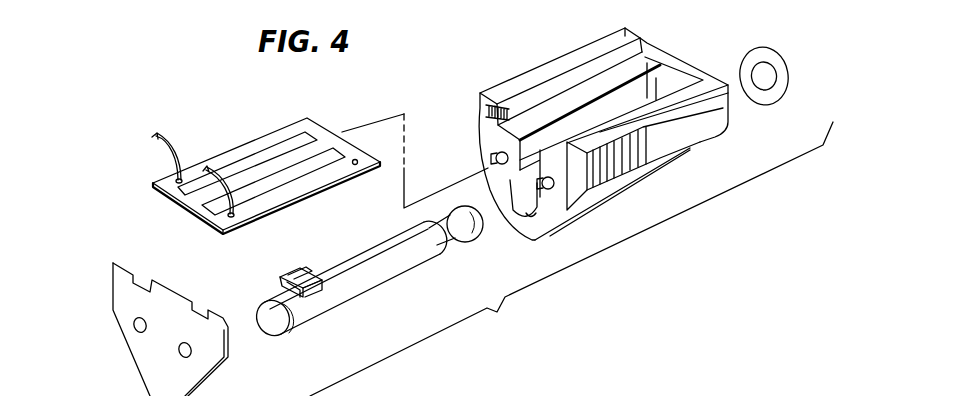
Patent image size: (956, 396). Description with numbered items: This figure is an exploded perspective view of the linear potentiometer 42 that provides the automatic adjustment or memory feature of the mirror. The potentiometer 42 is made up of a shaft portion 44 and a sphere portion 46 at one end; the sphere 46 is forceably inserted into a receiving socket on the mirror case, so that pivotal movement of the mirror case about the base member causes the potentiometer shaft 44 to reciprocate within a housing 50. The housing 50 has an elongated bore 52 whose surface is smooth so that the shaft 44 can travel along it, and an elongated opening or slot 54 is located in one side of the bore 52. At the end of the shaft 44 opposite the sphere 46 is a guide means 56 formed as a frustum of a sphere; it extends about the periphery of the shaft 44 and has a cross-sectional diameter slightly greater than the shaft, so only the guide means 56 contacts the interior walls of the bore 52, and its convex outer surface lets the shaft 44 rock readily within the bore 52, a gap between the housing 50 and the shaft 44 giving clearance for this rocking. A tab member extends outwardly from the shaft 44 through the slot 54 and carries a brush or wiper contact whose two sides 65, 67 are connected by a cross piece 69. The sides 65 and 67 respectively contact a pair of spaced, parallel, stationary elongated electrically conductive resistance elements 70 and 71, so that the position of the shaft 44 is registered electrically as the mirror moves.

The linear potentiometer 42 is at (367, 294).
The potentiometer shaft 44 is at (330, 302).
The sphere portion 46 is at (479, 236).
The housing 50 is at (580, 150).
The elongated bore 52 is at (532, 242).
The elongated opening or slot 54 is at (510, 196).
The guide means 56 is at (288, 330).
The brush side 65 is at (278, 275).
The brush side 67 is at (283, 283).
The cross piece 69 is at (305, 272).
The resistance element 70 is at (225, 162).
The resistance element 71 is at (290, 173).